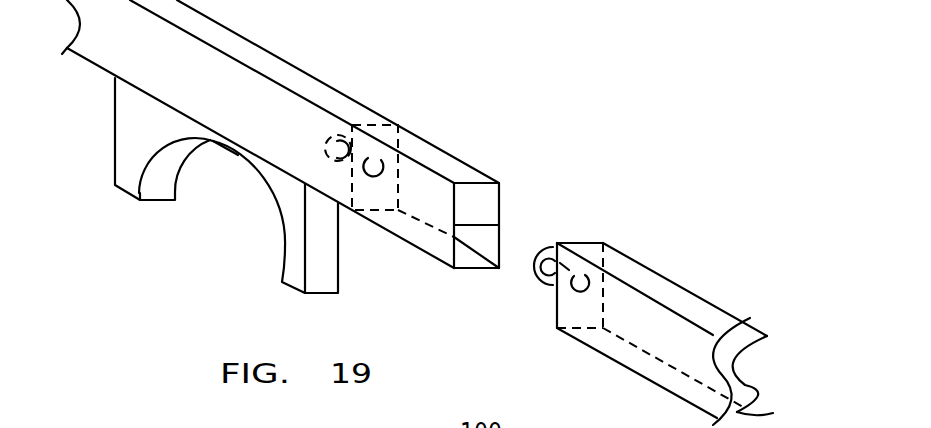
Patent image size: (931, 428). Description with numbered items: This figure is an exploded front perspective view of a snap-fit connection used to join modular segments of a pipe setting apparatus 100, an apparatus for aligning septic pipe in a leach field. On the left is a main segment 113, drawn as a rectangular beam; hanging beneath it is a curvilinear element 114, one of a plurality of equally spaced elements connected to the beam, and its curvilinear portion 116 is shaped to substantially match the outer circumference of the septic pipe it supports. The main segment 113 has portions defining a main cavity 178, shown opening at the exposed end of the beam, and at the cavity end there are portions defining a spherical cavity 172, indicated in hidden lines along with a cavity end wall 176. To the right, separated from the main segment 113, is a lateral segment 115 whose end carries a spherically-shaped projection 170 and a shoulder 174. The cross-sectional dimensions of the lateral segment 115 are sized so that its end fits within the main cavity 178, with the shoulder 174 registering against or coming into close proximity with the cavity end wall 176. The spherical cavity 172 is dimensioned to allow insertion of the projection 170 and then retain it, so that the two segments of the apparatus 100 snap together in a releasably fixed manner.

The pipe setting apparatus 100 is at (608, 168).
The main segment 113 is at (268, 63).
The curvilinear element 114 is at (297, 245).
The lateral segment 115 is at (653, 285).
The curvilinear portion 116 is at (238, 155).
The spherically-shaped projection 170 is at (553, 243).
The spherical cavity 172 is at (347, 136).
The shoulder 174 is at (554, 300).
The cavity end wall 176 is at (392, 178).
The main cavity 178 is at (476, 225).